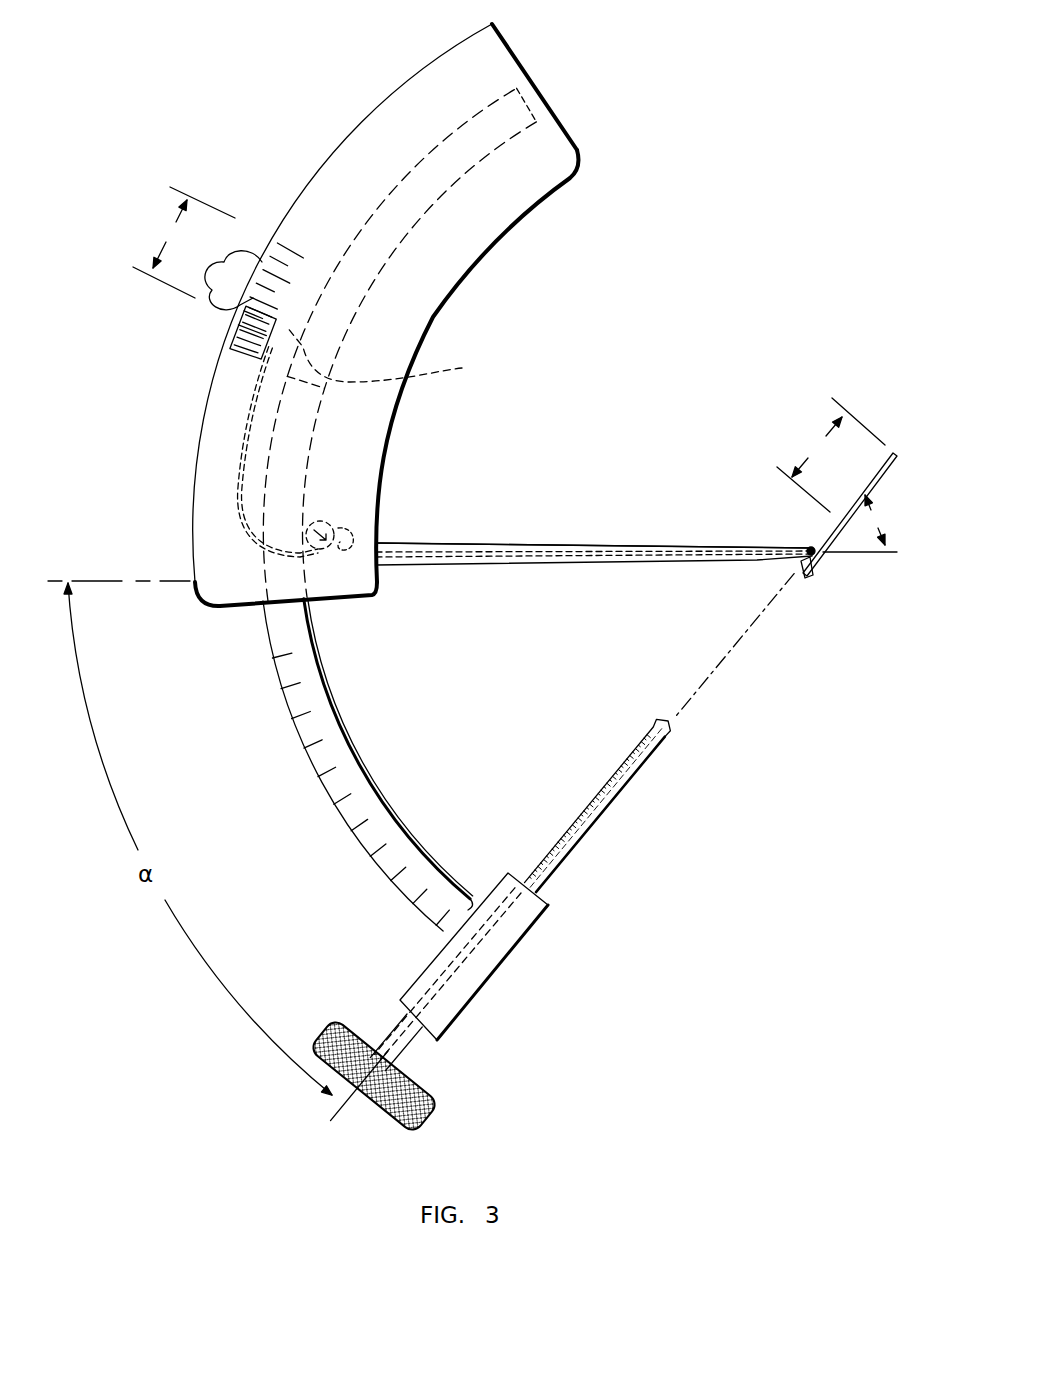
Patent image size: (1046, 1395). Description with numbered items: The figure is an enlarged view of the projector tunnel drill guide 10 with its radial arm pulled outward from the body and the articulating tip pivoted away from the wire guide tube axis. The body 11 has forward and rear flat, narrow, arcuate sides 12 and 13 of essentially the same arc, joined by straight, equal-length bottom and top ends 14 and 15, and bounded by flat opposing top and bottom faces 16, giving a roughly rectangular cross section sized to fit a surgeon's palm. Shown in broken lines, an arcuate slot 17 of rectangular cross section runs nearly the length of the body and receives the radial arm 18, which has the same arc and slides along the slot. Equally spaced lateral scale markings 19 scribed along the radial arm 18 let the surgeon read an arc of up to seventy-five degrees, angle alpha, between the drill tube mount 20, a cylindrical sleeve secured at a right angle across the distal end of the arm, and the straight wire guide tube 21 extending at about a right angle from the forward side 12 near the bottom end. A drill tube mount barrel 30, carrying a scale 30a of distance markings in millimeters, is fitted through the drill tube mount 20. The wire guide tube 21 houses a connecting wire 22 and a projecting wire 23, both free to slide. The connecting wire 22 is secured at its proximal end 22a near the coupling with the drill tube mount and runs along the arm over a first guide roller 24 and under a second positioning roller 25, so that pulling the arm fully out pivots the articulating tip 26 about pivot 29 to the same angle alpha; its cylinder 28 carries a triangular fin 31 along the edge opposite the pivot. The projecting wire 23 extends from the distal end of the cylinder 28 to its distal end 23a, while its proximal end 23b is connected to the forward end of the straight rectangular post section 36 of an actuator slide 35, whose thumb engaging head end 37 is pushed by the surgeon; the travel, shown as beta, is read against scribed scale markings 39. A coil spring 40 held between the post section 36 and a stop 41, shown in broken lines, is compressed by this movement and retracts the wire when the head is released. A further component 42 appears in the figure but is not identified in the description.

The projector tunnel drill guide 10 is at (740, 292).
The body 11 is at (632, 177).
The forward side 12 is at (411, 312).
The rear side 13 is at (415, 68).
The bottom end 14 is at (232, 610).
The top end 15 is at (537, 77).
The top and bottom faces 16 is at (489, 207).
The arcuate slot 17 is at (533, 155).
The radial arm 18 is at (357, 770).
The lateral scale markings 19 is at (350, 810).
The drill tube mount 20 is at (500, 948).
The straight wire guide tube 21 is at (447, 543).
The connecting wire 22 is at (610, 547).
The proximal end of connecting wire 22a is at (471, 896).
The projecting wire 23 is at (242, 430).
The distal end of projecting wire 23a is at (893, 453).
The proximal end of projecting wire 23b is at (388, 354).
The first guide roller 24 is at (332, 522).
The second positioning roller 25 is at (353, 540).
The articulating tip 26 is at (757, 533).
The articulating tip cylinder 28 is at (828, 537).
The pivot 29 is at (807, 547).
The drill tube mount barrel 30 is at (586, 834).
The barrel scale 30a is at (609, 771).
The fin 31 is at (808, 573).
The actuator slide 35 is at (165, 302).
The straight rectangular post section 36 is at (293, 300).
The thumb engaging head end 37 is at (219, 262).
The scale markings 39 is at (277, 233).
The coil spring 40 is at (230, 313).
The stop 41 is at (237, 357).
The plunger handle 42 is at (400, 1125).